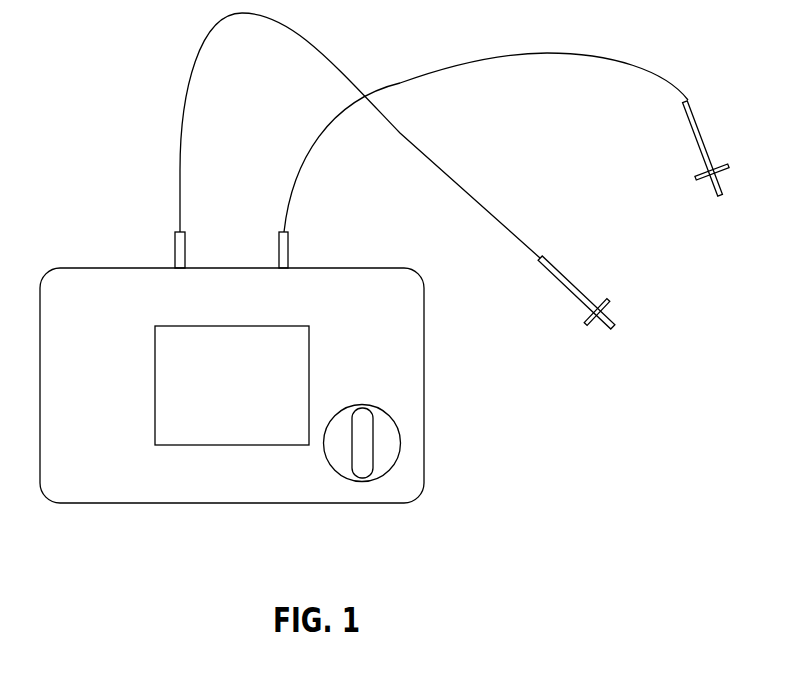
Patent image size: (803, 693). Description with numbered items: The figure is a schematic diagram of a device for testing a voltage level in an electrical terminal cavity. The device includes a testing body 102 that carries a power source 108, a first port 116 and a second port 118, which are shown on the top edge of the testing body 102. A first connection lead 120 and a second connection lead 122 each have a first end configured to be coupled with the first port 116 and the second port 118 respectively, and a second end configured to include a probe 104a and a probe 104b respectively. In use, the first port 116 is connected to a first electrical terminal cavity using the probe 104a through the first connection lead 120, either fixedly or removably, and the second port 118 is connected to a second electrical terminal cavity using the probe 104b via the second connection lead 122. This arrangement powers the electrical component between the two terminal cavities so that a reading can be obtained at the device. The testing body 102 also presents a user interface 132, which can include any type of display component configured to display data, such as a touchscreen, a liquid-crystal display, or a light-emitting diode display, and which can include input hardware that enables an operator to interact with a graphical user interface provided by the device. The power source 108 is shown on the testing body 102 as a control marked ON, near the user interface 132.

The testing body 102 is at (98, 268).
The probe 104a is at (547, 343).
The probe 104b is at (665, 198).
The power source 108 is at (332, 467).
The first port 116 is at (175, 252).
The second port 118 is at (288, 258).
The first connection lead 120 is at (578, 317).
The second connection lead 122 is at (695, 168).
The user interface 132 is at (230, 445).